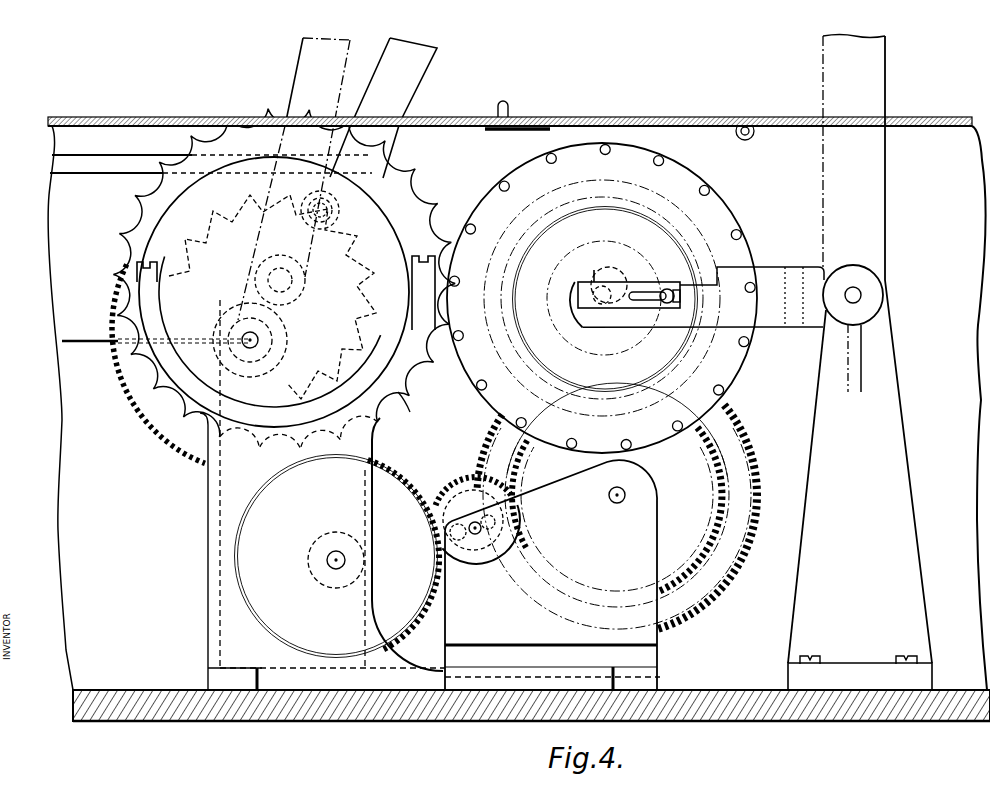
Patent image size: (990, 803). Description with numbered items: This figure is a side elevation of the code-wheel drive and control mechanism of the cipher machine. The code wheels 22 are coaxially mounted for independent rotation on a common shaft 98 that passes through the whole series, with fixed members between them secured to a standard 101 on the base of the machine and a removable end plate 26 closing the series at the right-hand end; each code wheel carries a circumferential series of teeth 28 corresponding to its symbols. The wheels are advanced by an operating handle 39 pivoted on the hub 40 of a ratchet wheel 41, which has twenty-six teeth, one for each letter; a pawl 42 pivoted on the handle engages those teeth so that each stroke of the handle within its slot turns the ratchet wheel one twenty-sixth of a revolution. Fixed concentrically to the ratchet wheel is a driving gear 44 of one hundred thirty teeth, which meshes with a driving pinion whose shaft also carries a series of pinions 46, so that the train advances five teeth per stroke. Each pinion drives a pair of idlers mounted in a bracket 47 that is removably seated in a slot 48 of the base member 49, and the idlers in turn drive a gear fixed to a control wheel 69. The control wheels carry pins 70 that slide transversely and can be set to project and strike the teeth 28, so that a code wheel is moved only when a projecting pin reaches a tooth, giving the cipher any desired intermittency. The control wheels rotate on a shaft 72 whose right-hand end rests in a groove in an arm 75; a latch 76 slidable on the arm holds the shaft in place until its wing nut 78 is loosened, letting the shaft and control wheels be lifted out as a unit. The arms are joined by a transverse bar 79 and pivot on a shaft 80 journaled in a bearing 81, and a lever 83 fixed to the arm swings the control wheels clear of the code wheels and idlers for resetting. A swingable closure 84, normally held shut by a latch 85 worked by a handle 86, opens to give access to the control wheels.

The code wheels 22 is at (420, 209).
The removable end plate 26 is at (395, 238).
The teeth 28 is at (410, 398).
The operating handle 39 is at (303, 62).
The hub 40 is at (267, 363).
The ratchet wheel 41 is at (228, 428).
The pawl 42 is at (313, 204).
The driving gear 44 is at (124, 398).
The pinions 46 is at (397, 489).
The brackets 47 is at (662, 625).
The slots 48 is at (662, 679).
The base member 49 is at (660, 655).
The control wheel 69 is at (740, 218).
The pins 70 is at (710, 188).
The shaft 72 is at (617, 280).
The arm 75 is at (772, 324).
The latch 76 is at (582, 300).
The wing nut 78 is at (667, 289).
The transverse bar 79 is at (796, 267).
The shaft 80 is at (853, 288).
The bearing 81 is at (873, 297).
The lever 83 is at (875, 80).
The swingable closure 84 is at (648, 116).
The latch 85 is at (483, 130).
The handle 86 is at (510, 108).
The common shaft 98 is at (272, 297).
The standard 101 is at (362, 443).